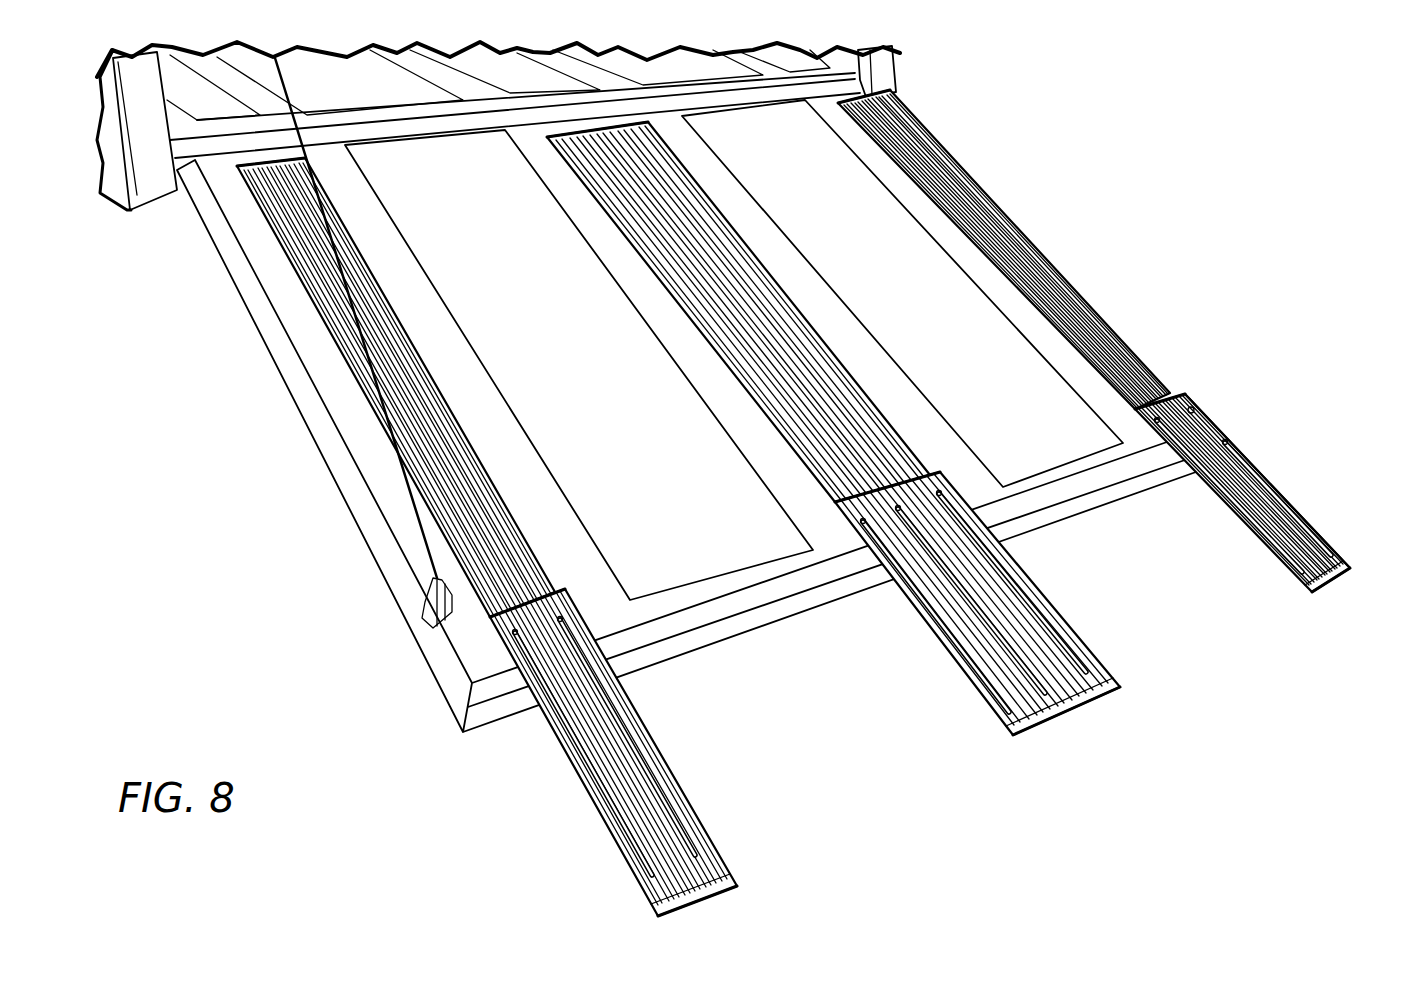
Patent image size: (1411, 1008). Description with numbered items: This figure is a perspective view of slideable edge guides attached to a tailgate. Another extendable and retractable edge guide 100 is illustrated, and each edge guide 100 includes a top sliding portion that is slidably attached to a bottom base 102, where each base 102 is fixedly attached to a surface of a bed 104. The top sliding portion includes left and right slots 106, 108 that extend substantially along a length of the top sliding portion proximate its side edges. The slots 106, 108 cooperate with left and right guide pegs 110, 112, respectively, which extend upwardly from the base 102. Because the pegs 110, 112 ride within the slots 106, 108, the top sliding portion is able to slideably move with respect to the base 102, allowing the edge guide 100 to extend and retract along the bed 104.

The extendable and retractable edge guide 100 is at (1104, 341).
The bottom base 102 is at (1050, 292).
The bed 104 is at (806, 175).
The left slot 106 is at (1194, 470).
The right slot 108 is at (1257, 478).
The left guide peg 110 is at (1150, 427).
The right guide peg 112 is at (1193, 410).